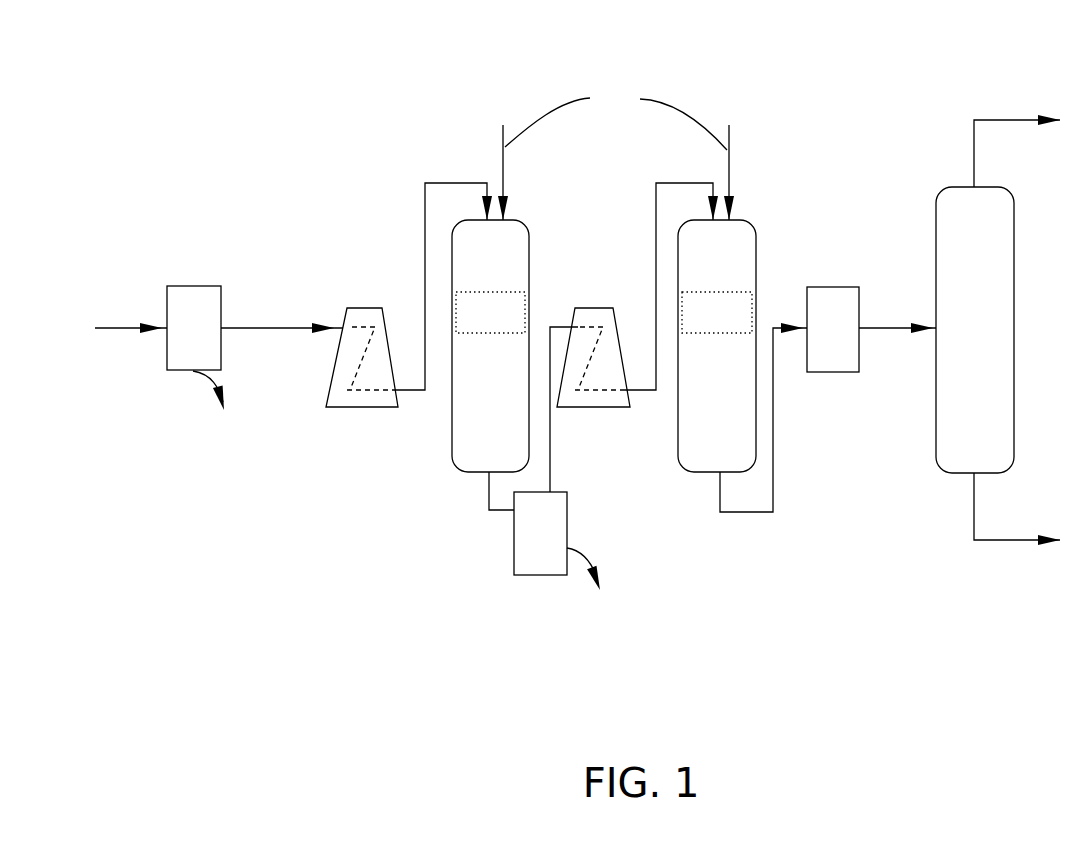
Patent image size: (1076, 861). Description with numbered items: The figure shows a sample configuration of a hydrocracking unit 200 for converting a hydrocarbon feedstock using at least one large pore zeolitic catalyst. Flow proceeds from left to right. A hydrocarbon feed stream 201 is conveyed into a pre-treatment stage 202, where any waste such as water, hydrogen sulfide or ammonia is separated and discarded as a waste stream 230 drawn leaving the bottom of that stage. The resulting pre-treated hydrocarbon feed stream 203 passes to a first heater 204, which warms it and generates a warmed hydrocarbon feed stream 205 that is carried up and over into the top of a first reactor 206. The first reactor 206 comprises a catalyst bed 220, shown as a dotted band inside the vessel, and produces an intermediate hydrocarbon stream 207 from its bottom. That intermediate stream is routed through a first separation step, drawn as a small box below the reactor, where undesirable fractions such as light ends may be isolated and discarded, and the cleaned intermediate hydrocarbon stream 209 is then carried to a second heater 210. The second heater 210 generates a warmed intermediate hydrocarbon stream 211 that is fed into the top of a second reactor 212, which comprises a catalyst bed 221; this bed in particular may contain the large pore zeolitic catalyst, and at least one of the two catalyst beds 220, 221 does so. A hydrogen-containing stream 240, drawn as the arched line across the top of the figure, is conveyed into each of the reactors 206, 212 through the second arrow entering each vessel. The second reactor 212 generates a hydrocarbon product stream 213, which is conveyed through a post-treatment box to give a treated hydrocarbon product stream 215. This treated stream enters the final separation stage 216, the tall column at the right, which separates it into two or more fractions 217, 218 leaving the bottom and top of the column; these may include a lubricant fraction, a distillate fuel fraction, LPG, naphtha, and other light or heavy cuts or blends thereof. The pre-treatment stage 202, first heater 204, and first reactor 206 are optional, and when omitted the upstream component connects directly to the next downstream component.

The hydrocracking unit 200 is at (524, 45).
The hydrocarbon feed stream 201 is at (128, 330).
The pre-treatment stage 202 is at (176, 340).
The waste stream 230 is at (210, 376).
The pre-treated hydrocarbon feed stream 203 is at (287, 328).
The first heater 204 is at (382, 398).
The warmed hydrocarbon feed stream 205 is at (425, 197).
The hydrogen-containing stream 240 is at (616, 153).
The first reactor 206 is at (504, 430).
The catalyst bed 220 is at (504, 324).
The intermediate hydrocarbon stream 207 is at (487, 487).
The cleaned intermediate hydrocarbon stream 209 is at (552, 458).
The second heater 210 is at (602, 401).
The warmed intermediate hydrocarbon stream 211 is at (656, 197).
The second reactor 212 is at (736, 430).
The catalyst bed 221 is at (736, 324).
The hydrocarbon product stream 213 is at (752, 512).
The treated hydrocarbon product stream 215 is at (898, 328).
The final separation stage 216 is at (994, 340).
The fraction 218 is at (1008, 118).
The fraction 217 is at (988, 543).